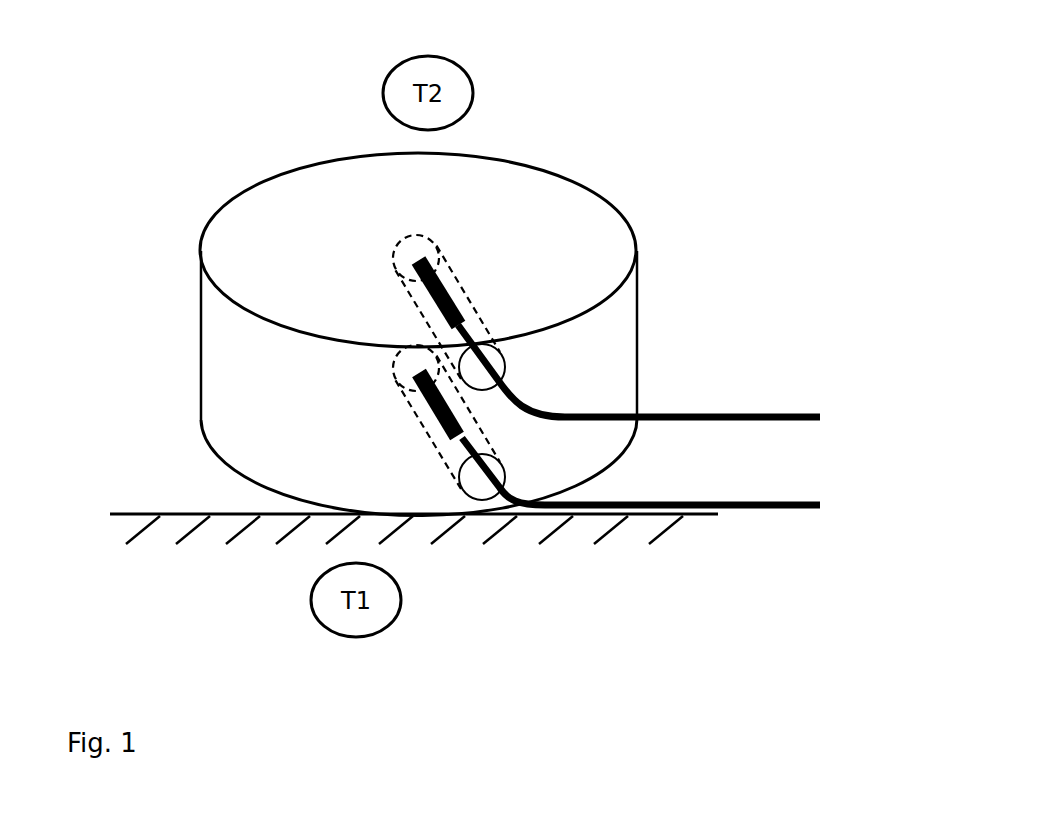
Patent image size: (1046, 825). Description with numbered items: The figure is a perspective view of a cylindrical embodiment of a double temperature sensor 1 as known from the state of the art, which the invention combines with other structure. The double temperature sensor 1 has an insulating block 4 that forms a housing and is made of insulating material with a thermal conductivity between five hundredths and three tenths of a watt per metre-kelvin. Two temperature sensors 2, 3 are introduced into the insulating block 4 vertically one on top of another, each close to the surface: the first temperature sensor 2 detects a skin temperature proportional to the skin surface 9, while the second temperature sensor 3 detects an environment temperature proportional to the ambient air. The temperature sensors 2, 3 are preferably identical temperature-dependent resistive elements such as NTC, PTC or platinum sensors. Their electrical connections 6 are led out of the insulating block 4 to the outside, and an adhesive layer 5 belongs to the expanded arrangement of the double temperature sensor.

The double temperature sensor 1 is at (493, 276).
The first temperature sensor 2 is at (415, 396).
The second temperature sensor 3 is at (450, 272).
The insulating block 4 is at (630, 305).
The adhesive layer 5 is at (505, 360).
The electrical connections 6 is at (648, 415).
The skin surface 9 is at (182, 513).